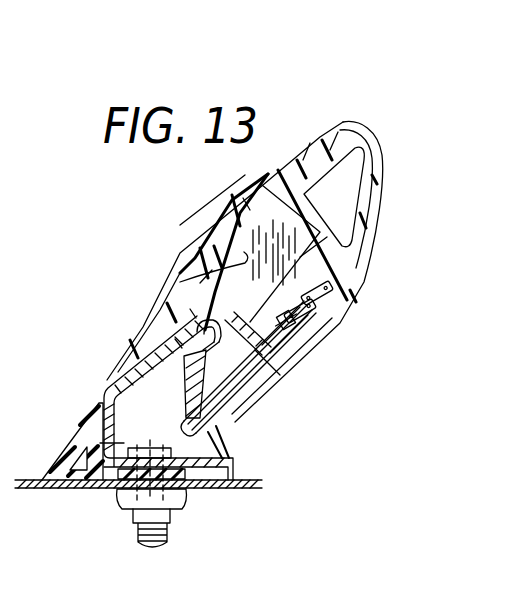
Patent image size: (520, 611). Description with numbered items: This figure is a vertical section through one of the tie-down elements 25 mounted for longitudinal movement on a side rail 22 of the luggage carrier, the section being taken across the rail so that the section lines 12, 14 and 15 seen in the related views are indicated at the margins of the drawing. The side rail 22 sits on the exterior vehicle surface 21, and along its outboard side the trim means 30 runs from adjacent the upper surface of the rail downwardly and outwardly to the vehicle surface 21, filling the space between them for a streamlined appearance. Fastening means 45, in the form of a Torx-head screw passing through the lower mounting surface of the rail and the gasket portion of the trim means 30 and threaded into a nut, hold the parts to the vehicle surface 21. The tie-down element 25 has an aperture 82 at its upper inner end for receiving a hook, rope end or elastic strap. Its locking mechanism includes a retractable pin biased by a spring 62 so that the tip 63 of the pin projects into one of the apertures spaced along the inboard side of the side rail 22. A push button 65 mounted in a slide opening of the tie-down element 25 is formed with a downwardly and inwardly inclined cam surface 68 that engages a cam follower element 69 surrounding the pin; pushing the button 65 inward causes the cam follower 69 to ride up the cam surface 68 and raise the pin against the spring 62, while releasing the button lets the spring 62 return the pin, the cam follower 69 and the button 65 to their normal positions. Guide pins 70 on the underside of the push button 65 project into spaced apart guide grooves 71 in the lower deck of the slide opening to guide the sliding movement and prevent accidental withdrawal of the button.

The section line 12- 12 is at (40, 70).
The section line 14- 14 is at (378, 88).
The section line 15- 15 is at (160, 255).
The exterior vehicle surface 21 is at (43, 482).
The side rail 22 is at (118, 392).
The tie-down element 25 is at (278, 172).
The trim means 30 is at (58, 440).
The fastening means 45 is at (189, 513).
The spring 62 is at (330, 316).
The tip 63 is at (195, 429).
The push button 65 is at (258, 196).
The cam surface 68 is at (200, 283).
The cam follower element 69 is at (313, 325).
The guide pins 70 is at (190, 309).
The guide grooves 71 is at (175, 339).
The aperture 82 is at (352, 197).